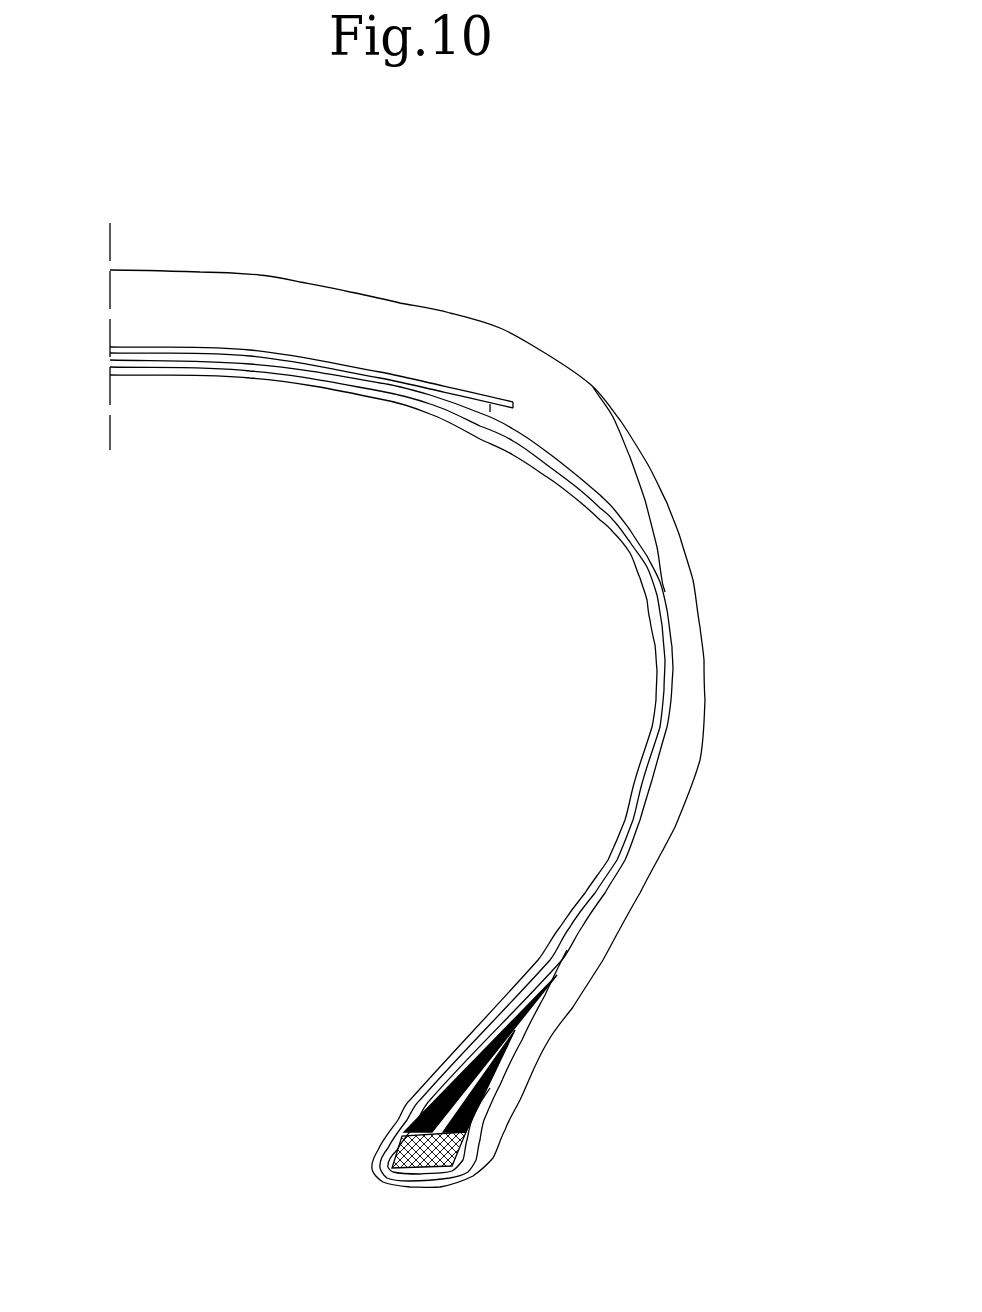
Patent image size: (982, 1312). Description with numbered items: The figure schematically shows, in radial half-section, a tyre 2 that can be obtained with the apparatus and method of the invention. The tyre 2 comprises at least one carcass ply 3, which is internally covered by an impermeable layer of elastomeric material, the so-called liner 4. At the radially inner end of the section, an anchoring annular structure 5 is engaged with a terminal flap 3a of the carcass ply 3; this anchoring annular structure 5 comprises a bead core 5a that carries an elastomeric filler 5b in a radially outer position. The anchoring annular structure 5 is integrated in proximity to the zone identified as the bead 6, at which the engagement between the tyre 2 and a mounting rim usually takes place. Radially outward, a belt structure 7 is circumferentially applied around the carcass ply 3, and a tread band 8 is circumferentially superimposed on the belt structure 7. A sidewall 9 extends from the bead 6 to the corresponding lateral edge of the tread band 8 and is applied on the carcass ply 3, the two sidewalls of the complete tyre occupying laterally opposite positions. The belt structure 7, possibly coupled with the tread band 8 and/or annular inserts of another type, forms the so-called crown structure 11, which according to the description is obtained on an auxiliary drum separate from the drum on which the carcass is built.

The tyre 2 is at (602, 260).
The carcass ply 3 is at (637, 820).
The terminal flap 3a is at (547, 990).
The liner 4 is at (653, 727).
The anchoring annular structure 5 is at (439, 1067).
The bead core 5a is at (460, 1152).
The elastomeric filler 5b is at (497, 1037).
The bead 6 is at (522, 1122).
The belt structure 7 is at (137, 352).
The tread band 8 is at (336, 288).
The sidewall 9 is at (683, 735).
The crown structure 11 is at (461, 385).